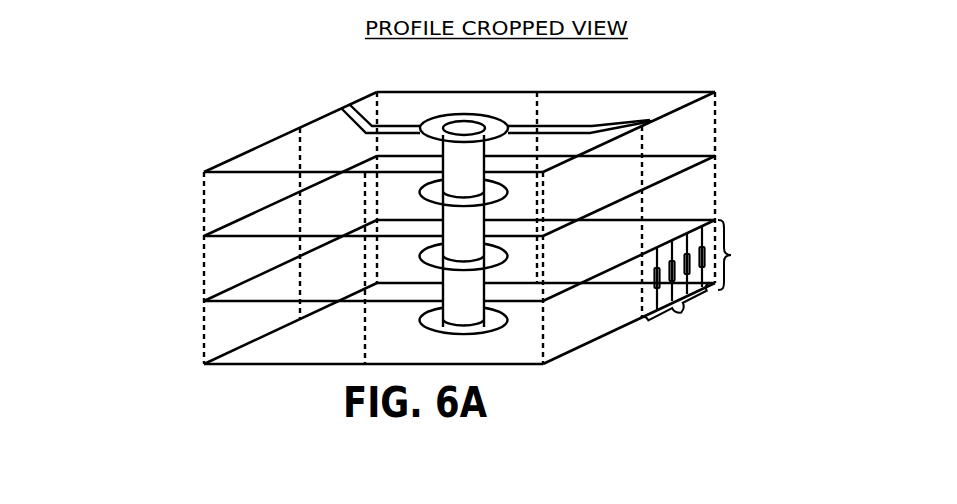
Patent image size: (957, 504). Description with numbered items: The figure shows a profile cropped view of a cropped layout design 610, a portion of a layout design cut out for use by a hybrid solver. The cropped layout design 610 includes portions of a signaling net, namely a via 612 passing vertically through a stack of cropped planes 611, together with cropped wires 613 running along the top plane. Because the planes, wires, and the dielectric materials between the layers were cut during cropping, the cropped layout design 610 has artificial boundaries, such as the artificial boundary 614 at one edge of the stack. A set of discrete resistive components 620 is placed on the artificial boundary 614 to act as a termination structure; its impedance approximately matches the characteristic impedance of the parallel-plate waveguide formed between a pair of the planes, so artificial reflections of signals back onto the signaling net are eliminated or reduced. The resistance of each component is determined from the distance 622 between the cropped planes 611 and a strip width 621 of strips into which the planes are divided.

The cropped layout design 610 is at (888, 57).
The cropped planes 611 is at (203, 174).
The via 612 is at (443, 168).
The cropped wires 613 is at (548, 123).
The artificial boundary 614 is at (640, 300).
The set of discrete resistive components 620 is at (696, 215).
The width 621 is at (698, 319).
The distance 622 is at (779, 255).